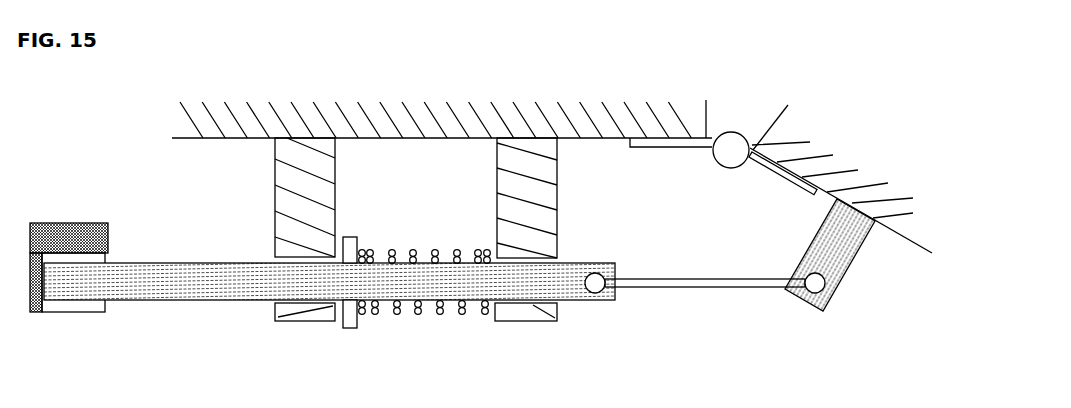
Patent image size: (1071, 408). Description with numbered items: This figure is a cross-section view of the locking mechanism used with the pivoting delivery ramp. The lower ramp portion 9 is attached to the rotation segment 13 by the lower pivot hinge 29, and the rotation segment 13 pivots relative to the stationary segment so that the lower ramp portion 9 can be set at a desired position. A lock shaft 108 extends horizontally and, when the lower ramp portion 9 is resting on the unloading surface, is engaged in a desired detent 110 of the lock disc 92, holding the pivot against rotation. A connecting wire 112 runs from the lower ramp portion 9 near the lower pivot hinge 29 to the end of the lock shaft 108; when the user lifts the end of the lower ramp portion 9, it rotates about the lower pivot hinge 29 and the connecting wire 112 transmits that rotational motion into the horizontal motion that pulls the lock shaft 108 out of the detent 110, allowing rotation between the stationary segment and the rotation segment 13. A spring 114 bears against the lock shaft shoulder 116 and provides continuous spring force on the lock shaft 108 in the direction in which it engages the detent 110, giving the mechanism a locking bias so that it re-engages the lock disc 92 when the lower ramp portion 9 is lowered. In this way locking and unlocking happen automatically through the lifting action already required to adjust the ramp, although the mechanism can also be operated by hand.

The rotation segment 13 is at (418, 113).
The lower pivot hinge 29 is at (733, 146).
The lower ramp portion 9 is at (857, 177).
The lock disc 92 is at (90, 237).
The detent 110 is at (82, 308).
The lock shaft 108 is at (205, 288).
The lock shaft shoulder 116 is at (350, 317).
The spring 114 is at (447, 305).
The connecting wire 112 is at (713, 287).